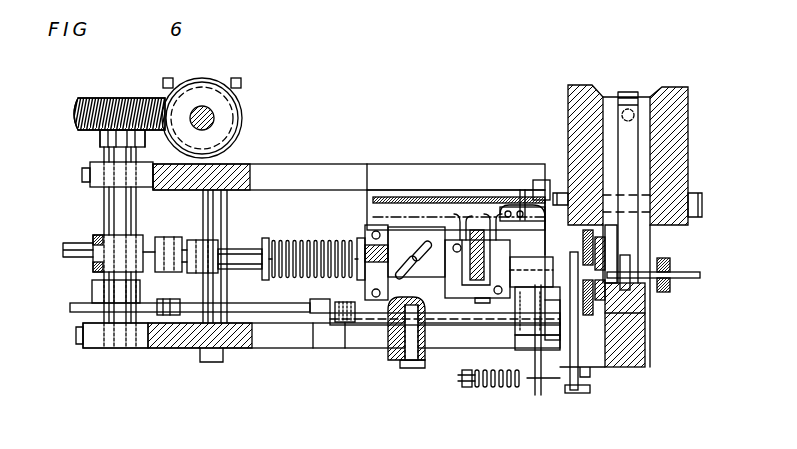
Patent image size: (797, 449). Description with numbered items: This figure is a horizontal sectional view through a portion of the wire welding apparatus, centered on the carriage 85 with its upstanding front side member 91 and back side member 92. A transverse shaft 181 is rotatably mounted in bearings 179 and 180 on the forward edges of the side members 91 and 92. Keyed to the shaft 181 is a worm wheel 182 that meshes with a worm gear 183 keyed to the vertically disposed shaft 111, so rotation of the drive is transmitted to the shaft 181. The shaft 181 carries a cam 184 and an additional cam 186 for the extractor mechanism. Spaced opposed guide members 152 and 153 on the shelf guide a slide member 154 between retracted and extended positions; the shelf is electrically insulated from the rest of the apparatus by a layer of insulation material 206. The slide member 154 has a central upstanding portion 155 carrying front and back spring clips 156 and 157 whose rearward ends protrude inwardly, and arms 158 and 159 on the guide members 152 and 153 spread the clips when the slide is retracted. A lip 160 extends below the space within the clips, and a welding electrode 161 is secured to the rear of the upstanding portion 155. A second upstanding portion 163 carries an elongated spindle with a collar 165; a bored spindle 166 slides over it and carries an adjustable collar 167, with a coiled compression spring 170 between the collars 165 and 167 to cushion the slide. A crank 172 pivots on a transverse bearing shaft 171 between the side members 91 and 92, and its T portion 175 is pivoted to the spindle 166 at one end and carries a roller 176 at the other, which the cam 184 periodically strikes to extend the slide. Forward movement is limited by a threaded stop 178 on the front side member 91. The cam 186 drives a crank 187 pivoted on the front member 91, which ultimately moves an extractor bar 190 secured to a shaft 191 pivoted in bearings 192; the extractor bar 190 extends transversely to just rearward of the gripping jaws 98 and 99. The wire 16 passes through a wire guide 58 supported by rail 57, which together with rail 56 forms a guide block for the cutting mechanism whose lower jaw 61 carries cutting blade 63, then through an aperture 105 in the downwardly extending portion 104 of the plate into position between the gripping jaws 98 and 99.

The wire 16 is at (700, 276).
The rail 56 is at (568, 117).
The rail 57 is at (690, 118).
The wire guide 58 is at (663, 285).
The lower movable jaw 61 is at (630, 135).
The cutting blade 63 is at (628, 262).
The carriage 85 is at (243, 350).
The front side member 91 is at (313, 350).
The back side member 92 is at (305, 178).
The gripping jaw 98 is at (640, 322).
The gripping jaw 99 is at (612, 244).
The downwardly extending portion 104 is at (612, 237).
The aperture 105 is at (600, 292).
The shaft 111 is at (212, 116).
The guide member 152 is at (453, 327).
The guide member 153 is at (427, 207).
The slide member 154 is at (420, 238).
The upstanding portion 155 is at (452, 284).
The spring clip 156 is at (528, 293).
The spring clip 157 is at (543, 183).
The arm 158 is at (530, 350).
The arm 159 is at (533, 190).
The lip 160 is at (549, 325).
The welding electrode 161 is at (512, 232).
The second upstanding portion 163 is at (366, 229).
The collar 165 is at (362, 248).
The spindle 166 is at (240, 250).
The collar 167 is at (267, 244).
The coiled compression spring 170 is at (305, 282).
The bearing shaft 171 is at (207, 203).
The crank 172 is at (203, 235).
The T portion 175 is at (190, 273).
The roller 176 is at (167, 250).
The stop 178 is at (311, 313).
The bearing 179 is at (141, 348).
The bearing 180 is at (97, 181).
The transverse shaft 181 is at (108, 150).
The worm wheel 182 is at (78, 106).
The worm gear 183 is at (216, 85).
The cam 184 is at (72, 253).
The cam 186 is at (75, 312).
The crank 187 is at (162, 306).
The extractor bar 190 is at (574, 393).
The shaft 191 is at (536, 380).
The bearing 192 is at (580, 392).
The insulation material 206 is at (378, 340).